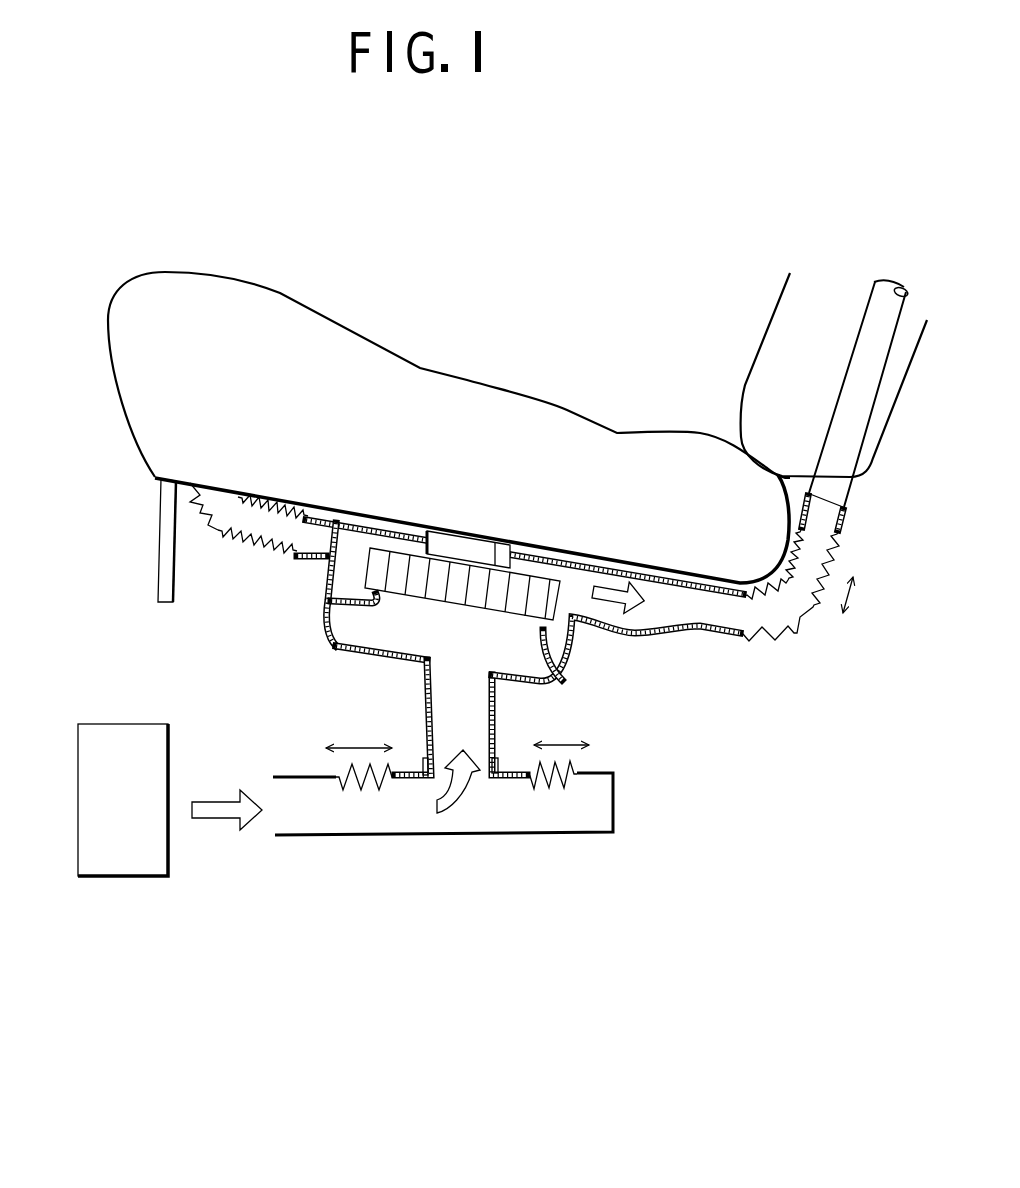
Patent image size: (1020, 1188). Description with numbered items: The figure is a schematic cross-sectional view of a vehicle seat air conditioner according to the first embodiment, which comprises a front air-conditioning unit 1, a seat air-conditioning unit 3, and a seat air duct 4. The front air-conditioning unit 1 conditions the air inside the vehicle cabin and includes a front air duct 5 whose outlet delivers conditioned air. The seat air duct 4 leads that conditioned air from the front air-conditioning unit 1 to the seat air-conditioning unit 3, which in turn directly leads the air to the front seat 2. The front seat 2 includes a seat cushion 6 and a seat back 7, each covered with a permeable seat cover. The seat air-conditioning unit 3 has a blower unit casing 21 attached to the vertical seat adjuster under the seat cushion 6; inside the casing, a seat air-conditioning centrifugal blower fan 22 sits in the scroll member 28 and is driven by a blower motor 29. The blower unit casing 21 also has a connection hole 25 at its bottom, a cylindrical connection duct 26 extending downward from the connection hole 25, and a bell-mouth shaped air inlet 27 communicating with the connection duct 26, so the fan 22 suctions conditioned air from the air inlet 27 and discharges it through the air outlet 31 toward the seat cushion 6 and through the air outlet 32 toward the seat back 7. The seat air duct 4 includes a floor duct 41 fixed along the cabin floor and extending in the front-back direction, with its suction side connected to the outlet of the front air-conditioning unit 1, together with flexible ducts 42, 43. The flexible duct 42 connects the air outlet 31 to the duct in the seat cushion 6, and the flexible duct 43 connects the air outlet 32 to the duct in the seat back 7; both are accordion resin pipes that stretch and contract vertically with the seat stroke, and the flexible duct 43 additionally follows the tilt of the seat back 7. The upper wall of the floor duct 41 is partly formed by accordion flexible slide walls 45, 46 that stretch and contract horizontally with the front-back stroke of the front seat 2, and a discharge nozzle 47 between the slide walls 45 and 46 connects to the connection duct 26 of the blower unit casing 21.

The front air-conditioning unit 1 is at (167, 823).
The front seat 2 is at (156, 251).
The seat air-conditioning unit 3 is at (767, 694).
The seat air duct 4 is at (463, 866).
The front air duct 5 is at (118, 722).
The seat cushion 6 is at (423, 366).
The seat back 7 is at (757, 331).
The blower unit casing 21 is at (322, 606).
The seat air-conditioning centrifugal blower fan 22 is at (460, 558).
The connection hole 25 is at (430, 650).
The connection duct 26 is at (427, 697).
The air inlet 27 is at (570, 660).
The scroll member 28 is at (324, 580).
The blower motor 29 is at (497, 552).
The air outlet 31 is at (324, 533).
The air outlet 32 is at (721, 612).
The floor duct 41 is at (297, 840).
The flexible duct 42 is at (210, 515).
The flexible duct 43 is at (797, 633).
The flexible slide wall 45 is at (338, 764).
The flexible slide wall 46 is at (565, 765).
The discharge nozzle 47 is at (500, 764).